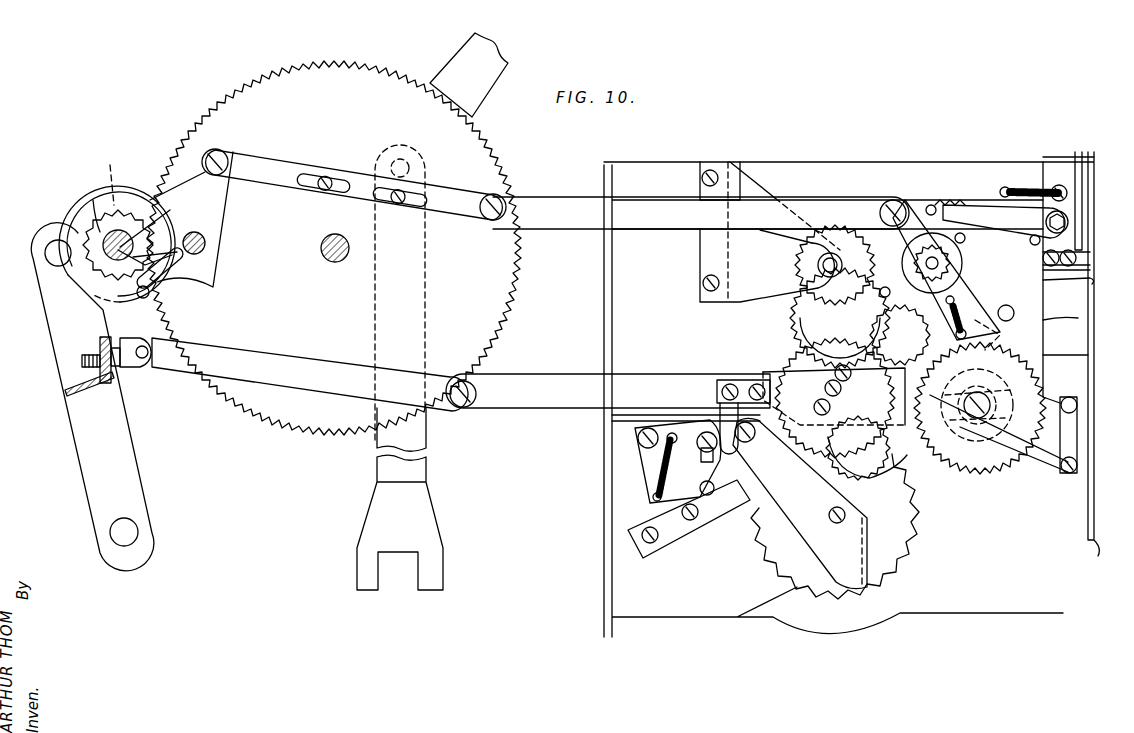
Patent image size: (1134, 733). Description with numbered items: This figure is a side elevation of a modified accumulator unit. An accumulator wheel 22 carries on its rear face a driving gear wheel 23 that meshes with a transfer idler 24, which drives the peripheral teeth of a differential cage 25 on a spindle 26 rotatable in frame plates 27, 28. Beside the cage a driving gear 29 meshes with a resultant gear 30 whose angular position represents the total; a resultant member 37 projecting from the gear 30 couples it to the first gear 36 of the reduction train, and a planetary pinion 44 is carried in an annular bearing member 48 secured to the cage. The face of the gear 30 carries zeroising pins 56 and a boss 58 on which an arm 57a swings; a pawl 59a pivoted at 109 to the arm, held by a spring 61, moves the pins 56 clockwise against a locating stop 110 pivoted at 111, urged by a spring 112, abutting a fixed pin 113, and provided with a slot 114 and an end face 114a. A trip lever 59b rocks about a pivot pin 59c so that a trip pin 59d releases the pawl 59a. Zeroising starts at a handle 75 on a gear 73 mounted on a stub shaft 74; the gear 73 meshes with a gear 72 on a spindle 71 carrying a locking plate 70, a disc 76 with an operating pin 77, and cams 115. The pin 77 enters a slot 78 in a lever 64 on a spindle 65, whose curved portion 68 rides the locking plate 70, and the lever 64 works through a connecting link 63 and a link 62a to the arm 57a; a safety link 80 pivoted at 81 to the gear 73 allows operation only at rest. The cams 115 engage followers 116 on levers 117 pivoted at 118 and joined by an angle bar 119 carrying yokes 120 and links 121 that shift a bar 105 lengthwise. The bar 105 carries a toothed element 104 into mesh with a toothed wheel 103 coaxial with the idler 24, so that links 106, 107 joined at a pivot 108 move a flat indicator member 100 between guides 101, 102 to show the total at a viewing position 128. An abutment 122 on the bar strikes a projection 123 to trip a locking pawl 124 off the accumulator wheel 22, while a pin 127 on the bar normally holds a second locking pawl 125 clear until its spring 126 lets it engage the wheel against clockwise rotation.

The accumulator wheel 22 is at (916, 528).
The driving gear wheel 23 is at (864, 467).
The idler gear wheel 24 is at (792, 350).
The differential cage 25 is at (759, 265).
The spindle 26 is at (820, 262).
The frame plate 27 is at (750, 168).
The frame plate 28 is at (752, 190).
The driving gear 29 is at (870, 270).
The resultant gear 30 is at (965, 264).
The first gear 36 is at (962, 256).
The resultant member 37 is at (896, 298).
The planetary pinion 44 is at (792, 312).
The annular bearing member 48 is at (805, 300).
The zeroising pin 56 is at (928, 205).
The arm 57a is at (902, 204).
The boss 58 is at (940, 252).
The pawl 59a is at (900, 335).
The trip lever 59b is at (996, 337).
The pivot pin 59c is at (1080, 358).
The trip pin 59d is at (1060, 321).
The spring 61 is at (964, 317).
The link 62a is at (571, 229).
The connecting link 63 is at (462, 198).
The lever 64 is at (220, 212).
The spindle 65 is at (207, 243).
The curved peripheral portion 68 is at (160, 228).
The locking plate 70 is at (125, 210).
The spindle 71 is at (172, 210).
The gear 72 is at (105, 175).
The gear 73 is at (494, 153).
The stub shaft 74 is at (322, 251).
The handle 75 is at (482, 82).
The disc 76 is at (100, 198).
The operating pin 77 is at (150, 293).
The slot 78 is at (185, 262).
The link 80 is at (428, 432).
The pivot 81 is at (410, 166).
The flat indicator member 100 is at (1088, 543).
The guide 101 is at (1043, 270).
The guide 102 is at (1068, 277).
The toothed wheel 103 is at (772, 374).
The toothed element 104 is at (994, 465).
The bar 105 is at (551, 410).
The link 106 is at (1044, 458).
The link 107 is at (1074, 440).
The pivot 108 is at (1069, 474).
The pivot 109 is at (1012, 310).
The locating stop 110 is at (965, 205).
The pivot 111 is at (1043, 257).
The spring 112 is at (1015, 188).
The fixed pin 113 is at (1030, 241).
The slot 114 is at (1046, 222).
The end face 114a is at (943, 203).
The cam 115 is at (72, 214).
The follower 116 is at (56, 242).
The lever 117 is at (62, 325).
The pivot 118 is at (122, 540).
The angle bar 119 is at (70, 395).
The yoke 120 is at (158, 340).
The link 121 is at (254, 360).
The abutment 122 is at (764, 408).
The projection 123 is at (718, 406).
The locking pawl 124 is at (740, 456).
The second locking pawl 125 is at (863, 448).
The spring 126 is at (966, 396).
The pin 127 is at (966, 424).
The viewing position 128 is at (1043, 281).